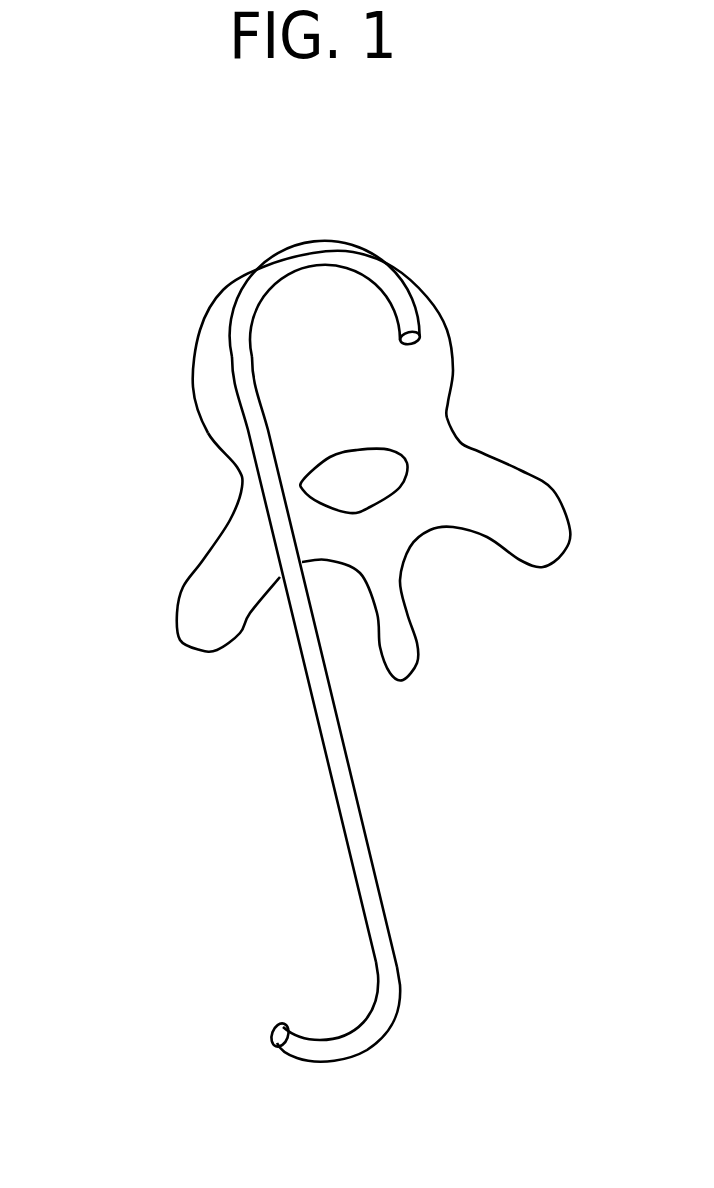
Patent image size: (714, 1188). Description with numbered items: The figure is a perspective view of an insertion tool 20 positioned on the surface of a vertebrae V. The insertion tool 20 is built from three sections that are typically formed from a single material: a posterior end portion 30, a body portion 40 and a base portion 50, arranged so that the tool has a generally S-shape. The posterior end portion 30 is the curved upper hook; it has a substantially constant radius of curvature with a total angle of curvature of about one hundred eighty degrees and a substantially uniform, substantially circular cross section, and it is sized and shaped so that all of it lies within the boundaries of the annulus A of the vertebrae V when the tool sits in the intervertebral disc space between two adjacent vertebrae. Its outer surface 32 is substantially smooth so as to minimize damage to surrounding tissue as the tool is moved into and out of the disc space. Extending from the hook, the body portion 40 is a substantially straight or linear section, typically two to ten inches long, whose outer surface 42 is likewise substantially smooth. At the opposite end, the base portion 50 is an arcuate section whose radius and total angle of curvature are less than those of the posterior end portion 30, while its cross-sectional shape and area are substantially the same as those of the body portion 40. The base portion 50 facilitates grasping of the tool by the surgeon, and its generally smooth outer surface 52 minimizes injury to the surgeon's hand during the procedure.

The insertion tool 20 is at (214, 763).
The posterior end portion 30 is at (216, 337).
The outer surface 32 is at (295, 267).
The body portion 40 is at (377, 816).
The outer surface 42 is at (352, 768).
The base portion 50 is at (394, 1044).
The outer surface 52 is at (350, 1062).
The annulus A is at (405, 263).
The vertebrae V is at (490, 443).